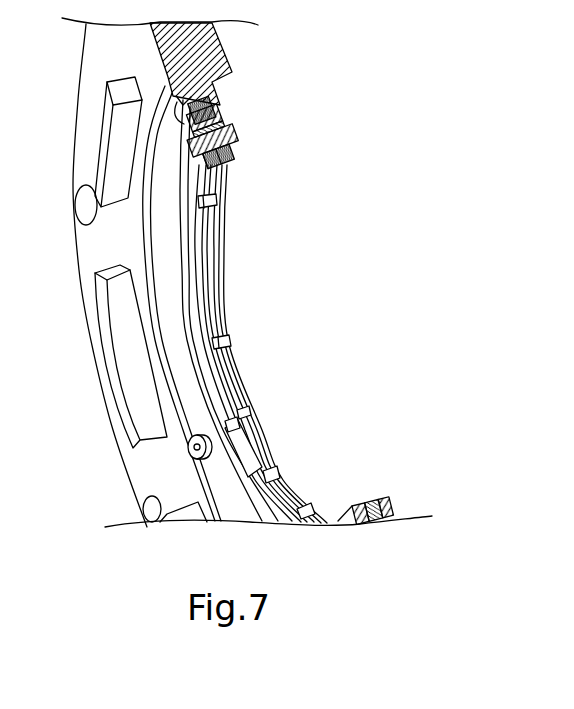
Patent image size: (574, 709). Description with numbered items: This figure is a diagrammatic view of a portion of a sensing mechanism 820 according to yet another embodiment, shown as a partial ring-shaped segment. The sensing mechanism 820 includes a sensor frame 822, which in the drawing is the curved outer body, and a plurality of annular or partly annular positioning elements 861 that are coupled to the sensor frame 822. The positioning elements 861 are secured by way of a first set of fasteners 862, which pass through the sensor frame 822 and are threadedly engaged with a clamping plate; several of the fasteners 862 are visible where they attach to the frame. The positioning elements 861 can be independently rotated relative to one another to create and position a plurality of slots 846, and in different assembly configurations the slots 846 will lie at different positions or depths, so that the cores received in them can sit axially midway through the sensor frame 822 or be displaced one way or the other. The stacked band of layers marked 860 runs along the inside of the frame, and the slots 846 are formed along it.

The sensing mechanism 820 is at (325, 228).
The sensor frame 822 is at (140, 462).
The slots 846 is at (250, 450).
The band 860 is at (262, 396).
The positioning elements 861 is at (240, 152).
The fasteners 862 is at (196, 106).